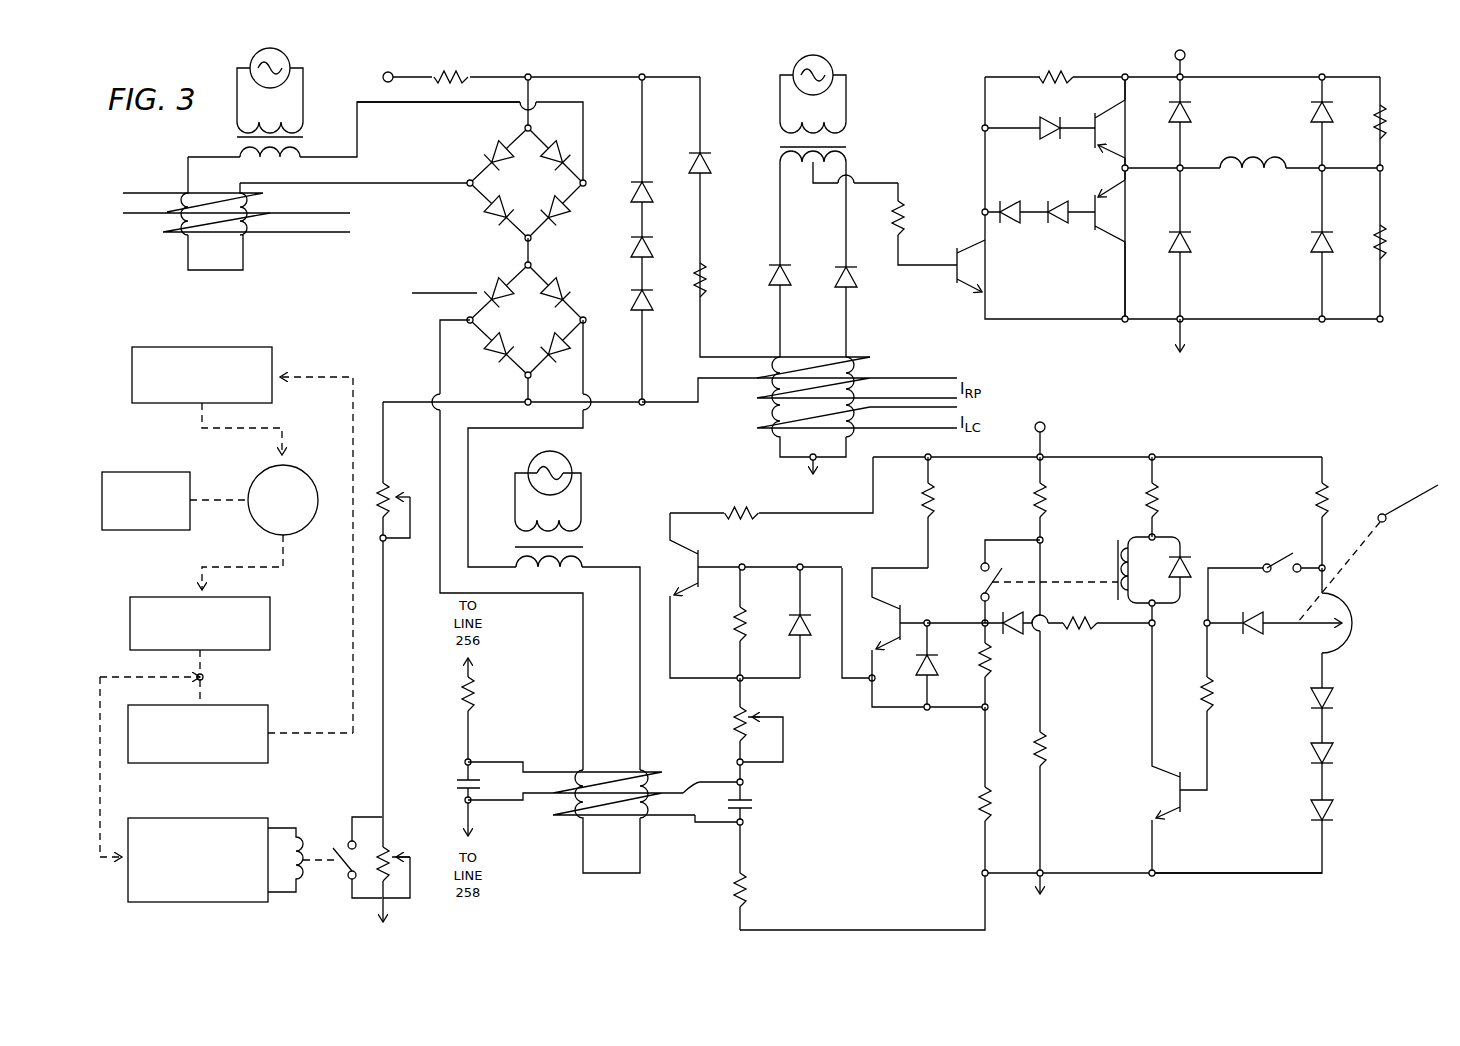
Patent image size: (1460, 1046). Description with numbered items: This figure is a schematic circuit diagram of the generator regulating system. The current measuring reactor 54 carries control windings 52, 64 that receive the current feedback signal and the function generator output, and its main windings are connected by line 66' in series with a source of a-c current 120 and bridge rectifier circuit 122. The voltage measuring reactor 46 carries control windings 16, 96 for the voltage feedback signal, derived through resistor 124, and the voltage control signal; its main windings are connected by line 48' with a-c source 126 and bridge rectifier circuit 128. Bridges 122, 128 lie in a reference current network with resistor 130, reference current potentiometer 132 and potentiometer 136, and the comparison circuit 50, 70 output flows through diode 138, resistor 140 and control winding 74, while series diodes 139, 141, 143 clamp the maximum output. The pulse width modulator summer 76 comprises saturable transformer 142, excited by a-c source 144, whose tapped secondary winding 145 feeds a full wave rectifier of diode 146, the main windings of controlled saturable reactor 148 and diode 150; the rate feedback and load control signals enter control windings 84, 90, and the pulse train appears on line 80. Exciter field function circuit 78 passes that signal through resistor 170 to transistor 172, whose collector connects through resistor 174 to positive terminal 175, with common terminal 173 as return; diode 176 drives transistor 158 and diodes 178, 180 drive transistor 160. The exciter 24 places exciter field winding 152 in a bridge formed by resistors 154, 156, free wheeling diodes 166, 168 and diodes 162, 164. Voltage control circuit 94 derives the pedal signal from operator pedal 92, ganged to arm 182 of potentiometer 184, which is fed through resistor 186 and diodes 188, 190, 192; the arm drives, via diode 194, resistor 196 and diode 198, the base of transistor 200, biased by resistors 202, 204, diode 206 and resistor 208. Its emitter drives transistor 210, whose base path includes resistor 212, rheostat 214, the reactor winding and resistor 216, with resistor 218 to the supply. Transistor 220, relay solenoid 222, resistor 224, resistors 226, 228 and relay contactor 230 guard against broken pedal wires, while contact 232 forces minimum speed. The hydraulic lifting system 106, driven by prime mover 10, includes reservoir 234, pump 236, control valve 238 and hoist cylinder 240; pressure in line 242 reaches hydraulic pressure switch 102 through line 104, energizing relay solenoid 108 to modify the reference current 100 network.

The prime mover 10 is at (142, 470).
The control winding 16 is at (435, 785).
The exciter 24 is at (1273, 65).
The voltage measuring reactor 46 is at (623, 908).
The line 48' is at (485, 545).
The comparison circuit 50 is at (489, 239).
The control winding 52 is at (140, 218).
The current measuring reactor 54 is at (220, 300).
The control winding 64 is at (328, 234).
The line 66' is at (438, 123).
The comparison circuit 70 is at (489, 239).
The control winding 74 is at (723, 381).
The pulse width modulator summer 76 is at (770, 69).
The exciter field function circuit 78 is at (1082, 67).
The line 80 is at (870, 188).
The control winding 84 is at (890, 377).
The control winding 90 is at (958, 432).
The operator pedal 92 is at (1398, 495).
The voltage control circuit 94 is at (947, 453).
The line 96 is at (684, 790).
The reference circuit 100 is at (360, 928).
The hydraulic pressure switch 102 is at (258, 816).
The line 104 is at (103, 783).
The hydraulic lifting system 106 is at (337, 606).
The relay solenoid 108 is at (305, 828).
The source of a-c current 120 is at (347, 139).
The bridge rectifier circuit 122 is at (543, 190).
The resistor 124 is at (323, 885).
The source of a-c current 126 is at (630, 535).
The bridge rectifier circuit 128 is at (543, 328).
The resistor 130 is at (478, 76).
The reference current potentiometer 132 is at (386, 480).
The potentiometer 136 is at (385, 840).
The diode 138 is at (708, 158).
The diode 139 is at (630, 188).
The resistor 140 is at (707, 275).
The diode 141 is at (632, 242).
The saturable transformer 142 is at (850, 140).
The diode 143 is at (632, 295).
The source of a-c 144 is at (850, 100).
The tapped secondary winding 145 is at (803, 180).
The diode 146 is at (790, 285).
The controlled saturable reactor 148 is at (897, 453).
The diode 150 is at (838, 268).
The exciter field winding 152 is at (1258, 158).
The resistor 154 is at (1388, 105).
The resistor 156 is at (1385, 252).
The PNP transistor 158 is at (1108, 126).
The NPN transistor 160 is at (1108, 210).
The free wheeling diode 162 is at (1195, 110).
The free wheeling diode 164 is at (1193, 245).
The free wheeling diode 166 is at (1312, 108).
The free wheeling diode 168 is at (1310, 250).
The resistor 170 is at (908, 222).
The PNP transistor 172 is at (972, 270).
The common terminal 173 is at (1185, 328).
The resistor 174 is at (1035, 74).
The positive terminal 175 is at (1175, 55).
The diode 176 is at (1035, 118).
The diode 178 is at (1012, 198).
The diode 180 is at (1068, 198).
The potentiometer arm 182 is at (1304, 628).
The potentiometer 184 is at (1355, 633).
The resistor 186 is at (1312, 498).
The diode 188 is at (1335, 692).
The diode 190 is at (1340, 752).
The diode 192 is at (1340, 808).
The diode 194 is at (1260, 615).
The resistor 196 is at (1088, 635).
The diode 198 is at (1015, 635).
The NPN transistor 200 is at (893, 615).
The resistor 202 is at (980, 660).
The resistor 204 is at (980, 805).
The diode 206 is at (918, 675).
The resistor 208 is at (938, 505).
The NPN transistor 210 is at (692, 556).
The resistor 212 is at (735, 634).
The rheostat 214 is at (738, 720).
The resistor 216 is at (752, 888).
The resistor 218 is at (735, 507).
The transistor 220 is at (1172, 783).
The relay solenoid 222 is at (1116, 548).
The resistor 224 is at (1165, 505).
The resistor 226 is at (1050, 505).
The resistor 228 is at (1052, 755).
The relay contactor 230 is at (981, 583).
The contact 232 is at (1270, 562).
The hydraulic reservoir 234 is at (273, 346).
The pump 236 is at (310, 468).
The control valve 238 is at (150, 596).
The hoist cylinder 240 is at (270, 720).
The line 242 is at (205, 695).